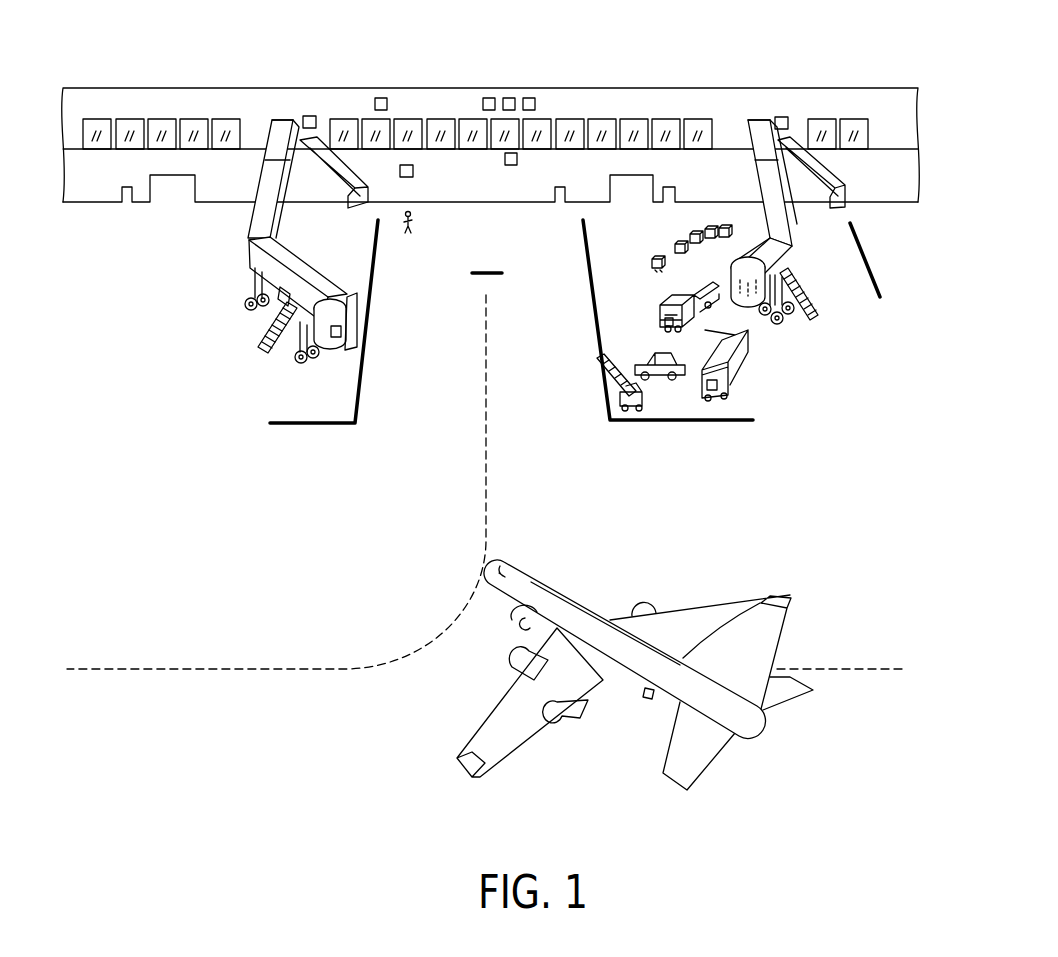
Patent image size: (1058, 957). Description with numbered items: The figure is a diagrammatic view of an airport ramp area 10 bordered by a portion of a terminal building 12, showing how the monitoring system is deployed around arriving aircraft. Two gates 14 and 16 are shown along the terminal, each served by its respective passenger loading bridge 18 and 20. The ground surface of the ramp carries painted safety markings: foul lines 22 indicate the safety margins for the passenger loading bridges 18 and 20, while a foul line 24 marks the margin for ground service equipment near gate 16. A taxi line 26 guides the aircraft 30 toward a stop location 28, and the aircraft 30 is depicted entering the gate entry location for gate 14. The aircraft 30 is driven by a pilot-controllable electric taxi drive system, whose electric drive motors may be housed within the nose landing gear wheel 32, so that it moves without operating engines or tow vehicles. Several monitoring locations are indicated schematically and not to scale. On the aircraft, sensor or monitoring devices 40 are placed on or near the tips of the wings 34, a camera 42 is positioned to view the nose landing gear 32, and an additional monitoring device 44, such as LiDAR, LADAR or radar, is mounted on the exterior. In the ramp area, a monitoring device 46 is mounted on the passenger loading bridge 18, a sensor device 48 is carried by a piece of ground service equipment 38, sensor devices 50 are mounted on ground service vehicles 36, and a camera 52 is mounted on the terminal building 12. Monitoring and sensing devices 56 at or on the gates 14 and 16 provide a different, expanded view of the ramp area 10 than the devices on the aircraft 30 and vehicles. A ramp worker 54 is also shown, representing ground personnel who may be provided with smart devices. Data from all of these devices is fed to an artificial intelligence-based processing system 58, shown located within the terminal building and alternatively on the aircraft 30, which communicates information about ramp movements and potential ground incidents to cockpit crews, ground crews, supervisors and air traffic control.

The airport ramp area 10 is at (108, 497).
The terminal building 12 is at (131, 112).
The gate 14 is at (287, 104).
The gate 16 is at (760, 104).
The passenger loading bridge 18 is at (263, 266).
The passenger loading bridge 20 is at (792, 224).
The foul lines 22 is at (302, 425).
The foul line 24 is at (640, 424).
The taxi line 26 is at (487, 452).
The stop location 28 is at (487, 272).
The aircraft 30 is at (621, 675).
The nose landing gear wheel 32 is at (513, 650).
The wings 34 is at (621, 685).
The ground service vehicles 36 is at (660, 300).
The ground service equipment 38 is at (697, 216).
The sensor or monitoring devices 40 is at (793, 597).
The camera 42 is at (512, 617).
The monitoring device 44 is at (650, 700).
The monitoring device 46 is at (337, 338).
The sensor device 48 is at (590, 366).
The sensor devices 50 is at (690, 318).
The camera 52 is at (510, 153).
The ramp worker 54 is at (425, 206).
The monitoring and sensing devices 56 is at (312, 116).
The artificial intelligence-based processing system 58 is at (413, 170).